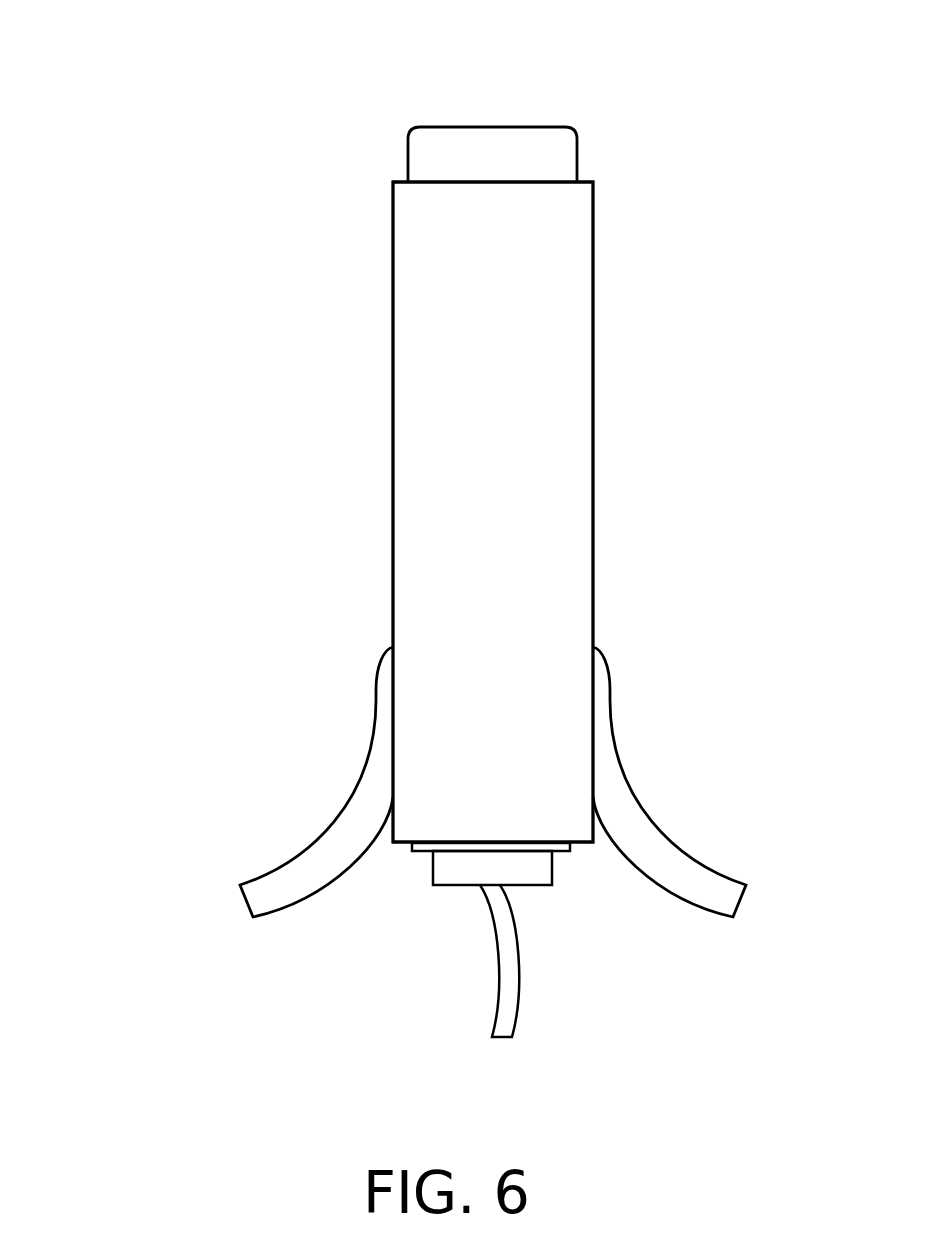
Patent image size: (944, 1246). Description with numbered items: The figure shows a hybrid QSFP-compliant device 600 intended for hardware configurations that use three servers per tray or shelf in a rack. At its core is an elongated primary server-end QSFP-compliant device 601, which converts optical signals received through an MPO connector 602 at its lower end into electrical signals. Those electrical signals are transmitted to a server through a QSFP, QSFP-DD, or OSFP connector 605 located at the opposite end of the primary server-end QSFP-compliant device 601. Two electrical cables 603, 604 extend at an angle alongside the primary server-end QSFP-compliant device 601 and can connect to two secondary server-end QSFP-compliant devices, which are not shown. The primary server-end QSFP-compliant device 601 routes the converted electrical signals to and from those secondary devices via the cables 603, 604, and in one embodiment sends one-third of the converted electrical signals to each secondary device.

The hybrid QSFP-compliant device 600 is at (153, 51).
The primary server-end QSFP-compliant device 601 is at (392, 400).
The MPO connector 602 is at (511, 948).
The electrical cable 603 is at (243, 900).
The electrical cable 604 is at (745, 902).
The QSFP, QSFP-DD, or OSFP connector 605 is at (578, 142).